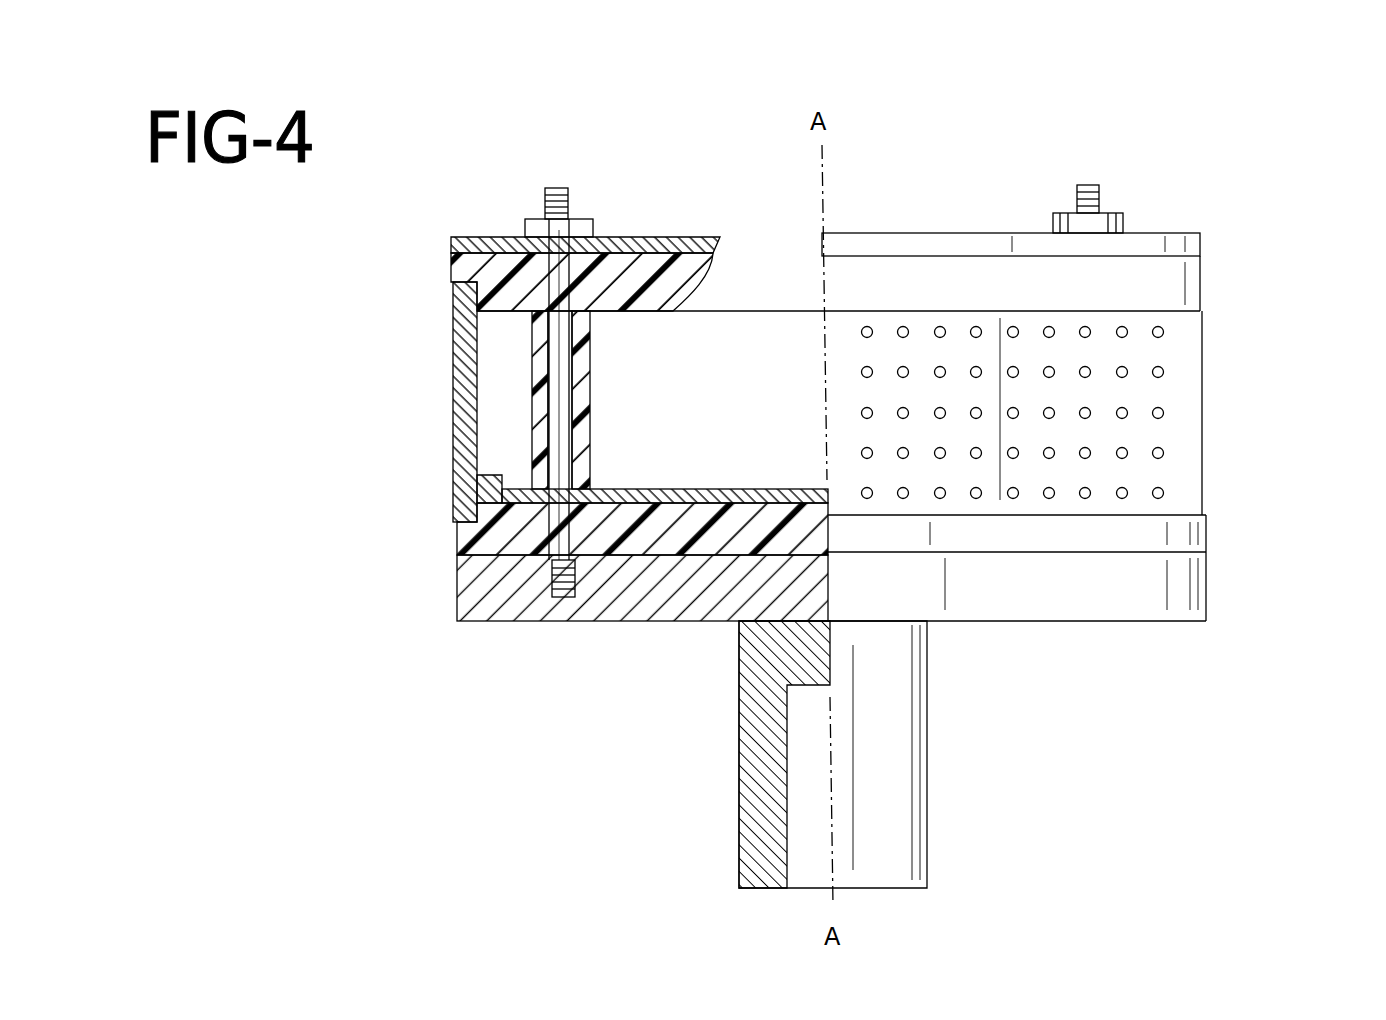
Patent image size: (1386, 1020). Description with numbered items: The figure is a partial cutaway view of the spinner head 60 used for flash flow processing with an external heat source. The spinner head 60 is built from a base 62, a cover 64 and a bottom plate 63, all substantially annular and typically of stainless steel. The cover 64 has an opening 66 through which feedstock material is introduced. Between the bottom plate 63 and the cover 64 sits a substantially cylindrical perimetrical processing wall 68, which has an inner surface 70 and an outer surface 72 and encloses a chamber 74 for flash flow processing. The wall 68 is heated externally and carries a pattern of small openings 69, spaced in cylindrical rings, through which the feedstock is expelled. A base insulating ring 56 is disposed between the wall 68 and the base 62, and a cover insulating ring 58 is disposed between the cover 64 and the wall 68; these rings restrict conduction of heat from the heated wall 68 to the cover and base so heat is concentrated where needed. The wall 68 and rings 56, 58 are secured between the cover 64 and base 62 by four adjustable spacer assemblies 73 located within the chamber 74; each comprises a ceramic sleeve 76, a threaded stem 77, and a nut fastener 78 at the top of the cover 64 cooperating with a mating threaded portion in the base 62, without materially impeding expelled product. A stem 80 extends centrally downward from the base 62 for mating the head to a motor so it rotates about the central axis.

The base insulating ring 56 is at (456, 537).
The cover insulating ring 58 is at (450, 270).
The spinner head 60 is at (930, 200).
The base 62 is at (1192, 605).
The bottom plate 63 is at (552, 597).
The cover 64 is at (473, 235).
The opening 66 is at (757, 248).
The perimetrical processing wall 68 is at (1105, 413).
The openings 69 is at (1158, 412).
The inner surface 70 is at (472, 452).
The outer surface 72 is at (455, 402).
The adjustable spacer assemblies 73 is at (532, 330).
The chamber 74 is at (770, 318).
The ceramic sleeve 76 is at (540, 386).
The threaded stem 77 is at (557, 188).
The nut fastener 78 is at (1120, 213).
The stem 80 is at (898, 748).